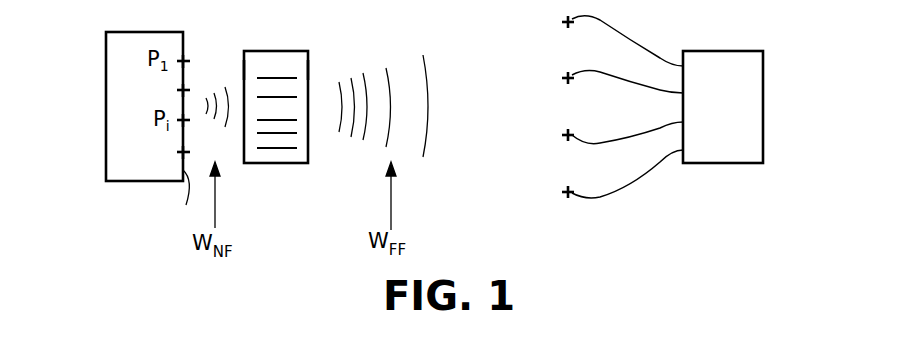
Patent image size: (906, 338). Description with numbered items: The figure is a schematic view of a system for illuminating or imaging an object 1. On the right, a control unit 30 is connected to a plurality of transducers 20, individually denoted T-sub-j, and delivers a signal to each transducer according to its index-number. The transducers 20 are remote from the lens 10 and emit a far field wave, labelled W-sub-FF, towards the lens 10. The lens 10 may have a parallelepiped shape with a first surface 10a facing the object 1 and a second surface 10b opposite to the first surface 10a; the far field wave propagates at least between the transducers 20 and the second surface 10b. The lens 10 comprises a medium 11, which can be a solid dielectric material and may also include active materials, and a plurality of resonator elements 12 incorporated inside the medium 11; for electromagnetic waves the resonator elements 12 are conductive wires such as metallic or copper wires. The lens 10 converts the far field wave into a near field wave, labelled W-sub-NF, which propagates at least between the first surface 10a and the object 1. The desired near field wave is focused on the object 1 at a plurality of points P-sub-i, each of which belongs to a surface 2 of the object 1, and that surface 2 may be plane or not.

The object 1 is at (106, 57).
The surface 2 is at (182, 196).
The lens 10 is at (277, 106).
The first surface 10a is at (244, 69).
The second surface 10b is at (308, 69).
The medium 11 is at (288, 68).
The resonator elements 12 is at (288, 148).
The plurality of transducers 20 is at (597, 221).
The control unit 30 is at (740, 51).